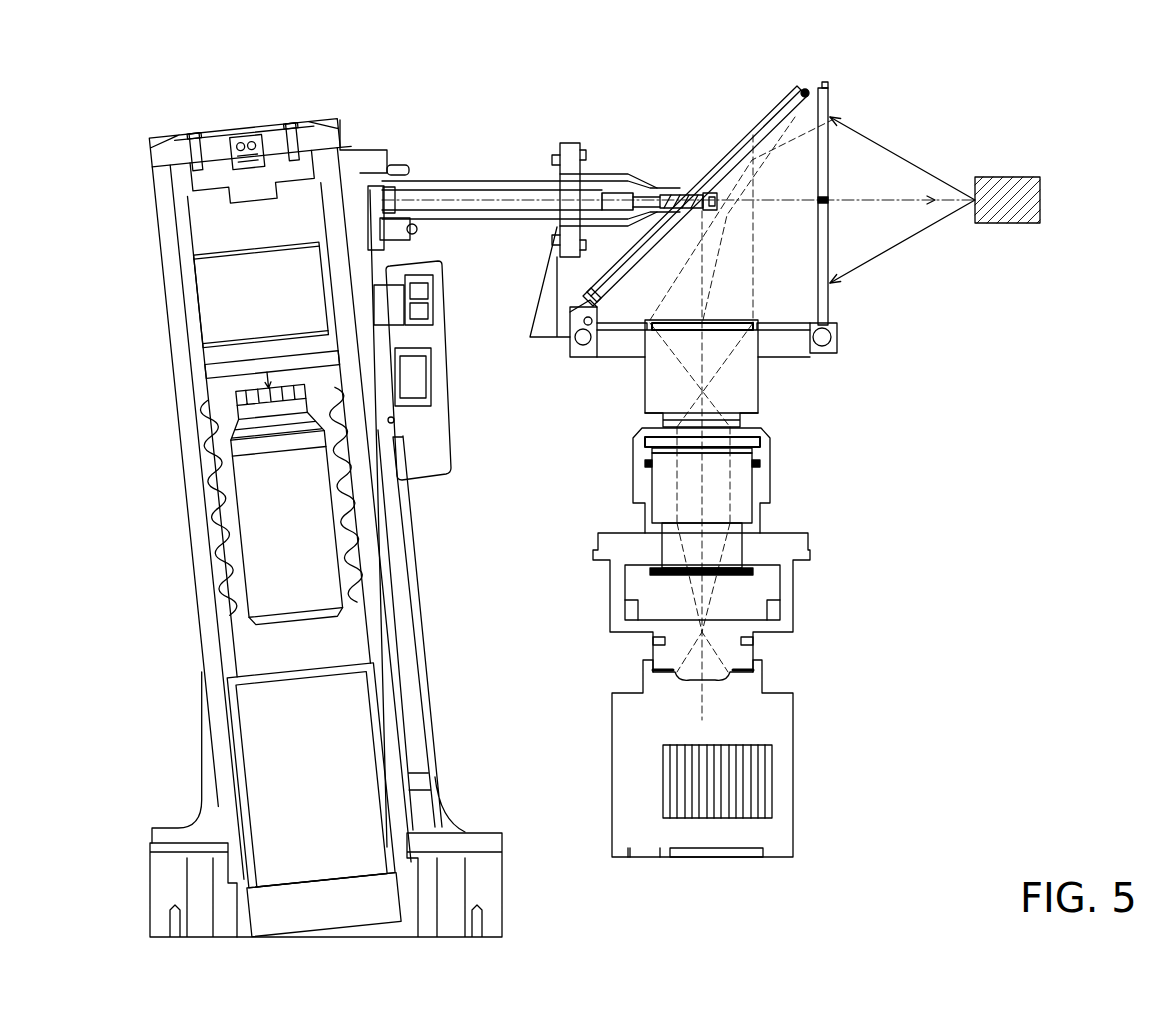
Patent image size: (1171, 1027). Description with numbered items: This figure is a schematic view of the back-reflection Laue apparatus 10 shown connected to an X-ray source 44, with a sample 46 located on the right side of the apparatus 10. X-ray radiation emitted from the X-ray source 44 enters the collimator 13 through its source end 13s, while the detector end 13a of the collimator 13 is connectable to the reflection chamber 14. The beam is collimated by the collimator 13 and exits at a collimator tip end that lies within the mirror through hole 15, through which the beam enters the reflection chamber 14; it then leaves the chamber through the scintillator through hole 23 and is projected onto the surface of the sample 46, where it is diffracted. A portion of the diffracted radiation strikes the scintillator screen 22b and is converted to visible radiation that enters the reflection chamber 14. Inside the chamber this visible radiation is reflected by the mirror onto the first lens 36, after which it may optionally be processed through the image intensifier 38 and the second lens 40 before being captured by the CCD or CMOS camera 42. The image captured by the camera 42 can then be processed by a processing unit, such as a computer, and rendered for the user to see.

The back-reflection Laue apparatus 10 is at (659, 88).
The collimator 13 is at (493, 183).
The detector end 13a is at (679, 194).
The source end 13s is at (393, 203).
The reflection chamber 14 is at (790, 160).
The mirror through hole 15 is at (717, 211).
The scintillator screen 22b is at (832, 96).
The scintillator through hole 23 is at (836, 195).
The first lens 36 is at (740, 387).
The image intensifier 38 is at (740, 487).
The second lens 40 is at (762, 601).
The CCD or CMOS camera 42 is at (775, 716).
The X-ray source 44 is at (385, 112).
The sample 46 is at (1006, 160).